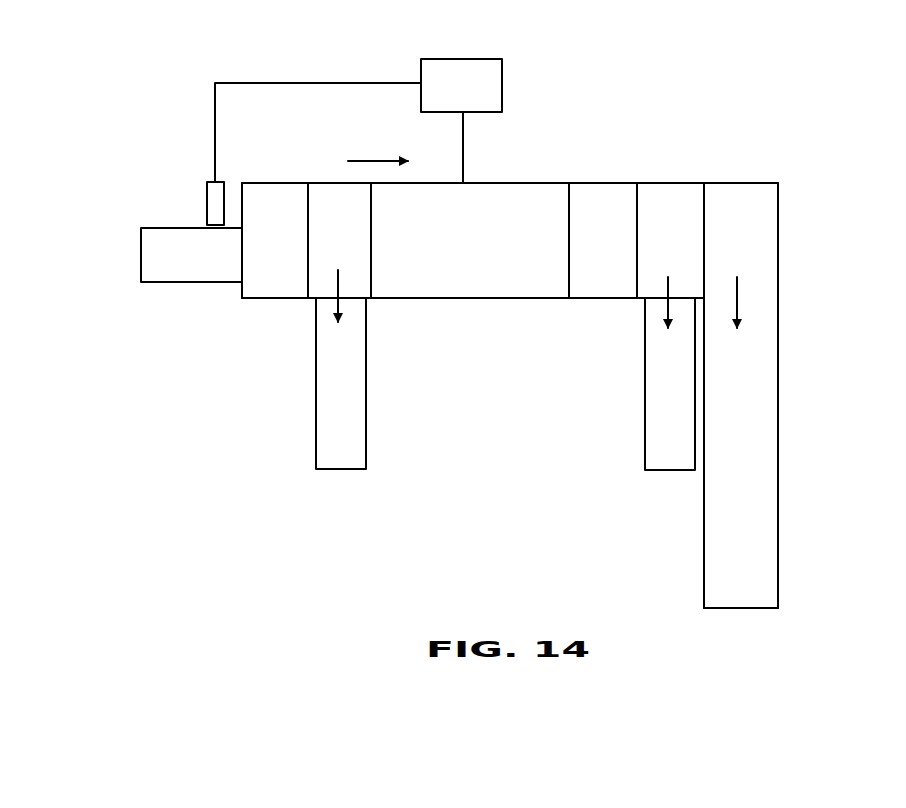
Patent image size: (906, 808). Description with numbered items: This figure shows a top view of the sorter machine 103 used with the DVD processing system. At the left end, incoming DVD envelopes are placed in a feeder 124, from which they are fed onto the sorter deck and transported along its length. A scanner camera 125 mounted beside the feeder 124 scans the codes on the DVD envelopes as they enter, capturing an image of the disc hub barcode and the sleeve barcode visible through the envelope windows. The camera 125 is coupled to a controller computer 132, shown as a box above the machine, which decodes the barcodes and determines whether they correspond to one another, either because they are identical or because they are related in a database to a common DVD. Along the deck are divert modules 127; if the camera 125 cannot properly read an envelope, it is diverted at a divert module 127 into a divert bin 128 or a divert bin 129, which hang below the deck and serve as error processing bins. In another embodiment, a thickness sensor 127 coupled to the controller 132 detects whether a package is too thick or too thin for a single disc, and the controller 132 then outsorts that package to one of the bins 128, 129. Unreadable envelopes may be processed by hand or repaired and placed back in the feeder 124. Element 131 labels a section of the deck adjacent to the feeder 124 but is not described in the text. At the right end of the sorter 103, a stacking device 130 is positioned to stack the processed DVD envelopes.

The sorter machine 103 is at (607, 124).
The feeder 124 is at (167, 240).
The scanner camera 125 is at (208, 195).
The divert module 127 is at (325, 190).
The divert bin 128 is at (352, 406).
The divert bin 129 is at (655, 407).
The stacking device 130 is at (722, 543).
The inlet chamber 131 is at (273, 300).
The controller computer 132 is at (502, 99).